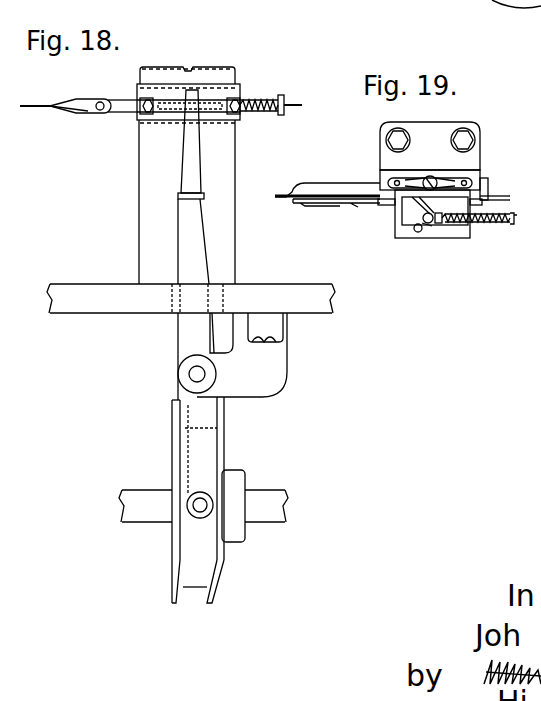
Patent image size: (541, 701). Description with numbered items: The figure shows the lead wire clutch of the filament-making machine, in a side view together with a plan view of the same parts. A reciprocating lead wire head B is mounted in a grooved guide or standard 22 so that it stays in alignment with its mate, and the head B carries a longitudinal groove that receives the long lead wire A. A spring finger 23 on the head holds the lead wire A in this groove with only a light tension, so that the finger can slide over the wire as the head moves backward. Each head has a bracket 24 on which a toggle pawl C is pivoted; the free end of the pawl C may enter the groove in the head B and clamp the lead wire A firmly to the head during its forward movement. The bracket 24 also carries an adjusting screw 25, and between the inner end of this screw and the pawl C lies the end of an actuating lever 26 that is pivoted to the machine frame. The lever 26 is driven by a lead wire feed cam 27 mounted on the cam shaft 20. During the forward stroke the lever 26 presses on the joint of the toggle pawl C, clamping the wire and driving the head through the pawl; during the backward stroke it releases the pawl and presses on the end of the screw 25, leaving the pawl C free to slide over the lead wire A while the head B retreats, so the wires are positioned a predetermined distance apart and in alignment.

In FIG. 18, the cam shaft 20 is at (262, 497).
In FIG. 18, the grooved guide or standard 22 is at (139, 154).
In FIG. 19, the grooved guide or standard 22 is at (388, 176).
In FIG. 18, the spring finger 23 is at (101, 109).
In FIG. 19, the spring finger 23 is at (328, 204).
In FIG. 18, the bracket 24 is at (207, 106).
In FIG. 19, the bracket 24 is at (444, 230).
In FIG. 18, the adjusting screw 25 is at (255, 112).
In FIG. 19, the adjusting screw 25 is at (487, 224).
In FIG. 18, the actuating lever 26 is at (183, 142).
In FIG. 19, the actuating lever 26 is at (430, 223).
In FIG. 18, the lead wire feed cam 27 is at (222, 430).
In FIG. 18, the lead wire A is at (292, 101).
In FIG. 19, the lead wire A is at (289, 196).
In FIG. 18, the lead wire head B is at (137, 88).
In FIG. 19, the lead wire head B is at (478, 184).
In FIG. 19, the toggle pawl C is at (427, 206).